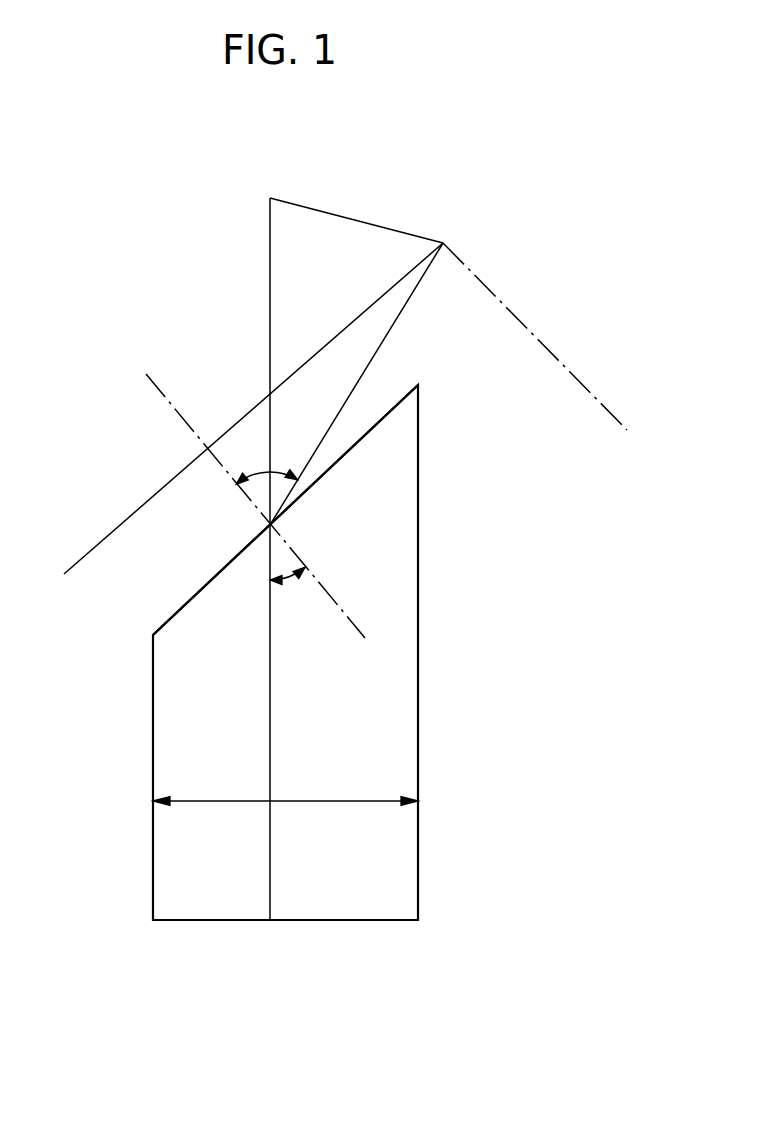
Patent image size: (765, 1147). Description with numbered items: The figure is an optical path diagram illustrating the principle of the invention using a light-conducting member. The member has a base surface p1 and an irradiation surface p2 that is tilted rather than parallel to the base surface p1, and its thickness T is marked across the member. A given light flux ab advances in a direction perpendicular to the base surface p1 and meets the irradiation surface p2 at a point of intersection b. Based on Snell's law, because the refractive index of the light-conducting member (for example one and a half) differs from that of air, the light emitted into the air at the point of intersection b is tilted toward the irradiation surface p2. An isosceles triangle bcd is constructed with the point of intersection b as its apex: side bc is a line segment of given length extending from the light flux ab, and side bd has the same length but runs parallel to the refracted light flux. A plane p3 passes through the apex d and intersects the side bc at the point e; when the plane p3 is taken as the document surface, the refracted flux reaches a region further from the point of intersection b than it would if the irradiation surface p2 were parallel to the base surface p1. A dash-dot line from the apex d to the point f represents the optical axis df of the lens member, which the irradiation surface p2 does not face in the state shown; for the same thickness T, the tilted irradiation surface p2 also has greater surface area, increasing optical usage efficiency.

The light flux point a is at (270, 573).
The point of intersection b is at (255, 506).
The triangle vertex c is at (352, 205).
The apex d is at (363, 370).
The intersection point e is at (262, 385).
The optical axis point f is at (541, 349).
The base surface p1 is at (367, 920).
The irradiation surface p2 is at (396, 398).
The plane p3 is at (135, 510).
The thickness T is at (320, 800).